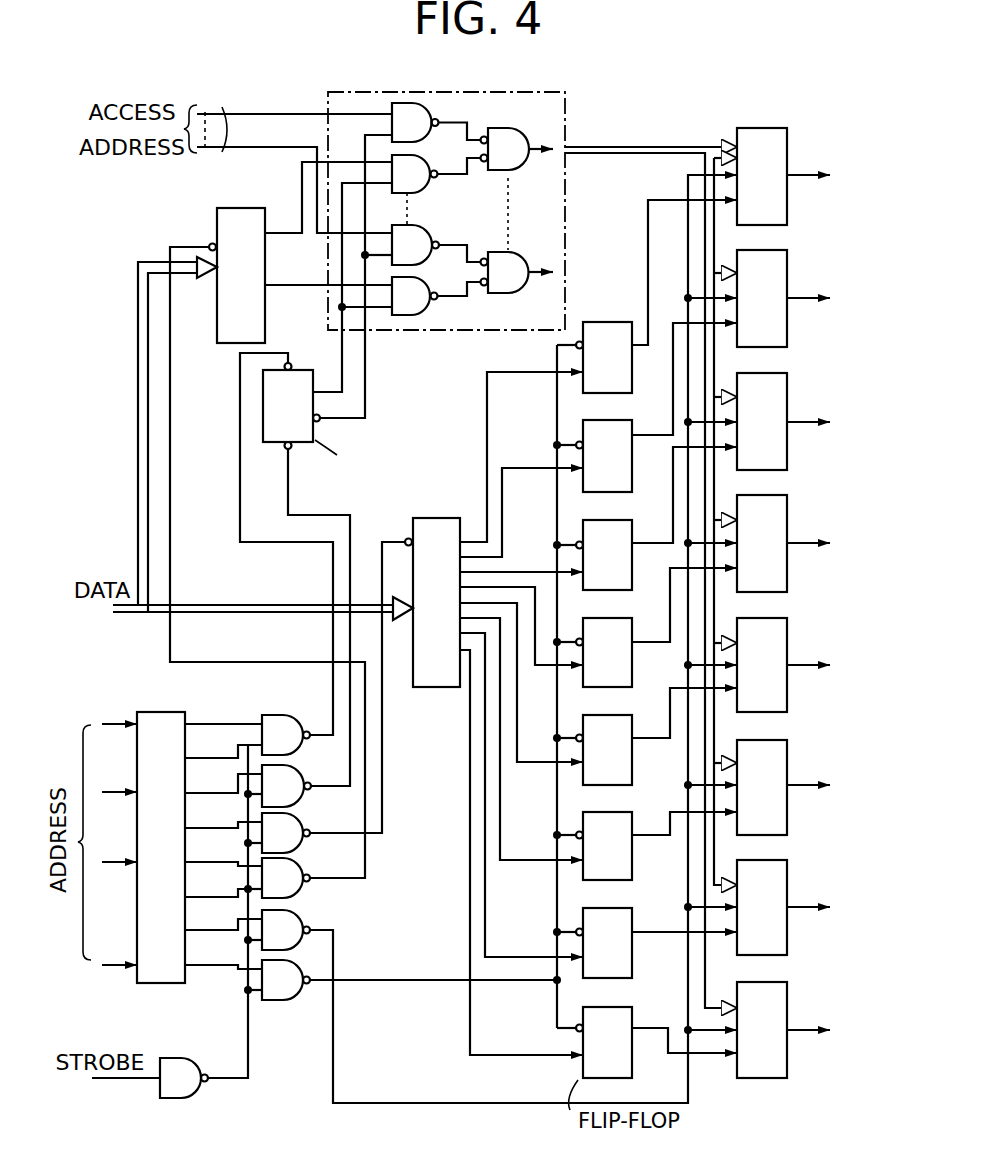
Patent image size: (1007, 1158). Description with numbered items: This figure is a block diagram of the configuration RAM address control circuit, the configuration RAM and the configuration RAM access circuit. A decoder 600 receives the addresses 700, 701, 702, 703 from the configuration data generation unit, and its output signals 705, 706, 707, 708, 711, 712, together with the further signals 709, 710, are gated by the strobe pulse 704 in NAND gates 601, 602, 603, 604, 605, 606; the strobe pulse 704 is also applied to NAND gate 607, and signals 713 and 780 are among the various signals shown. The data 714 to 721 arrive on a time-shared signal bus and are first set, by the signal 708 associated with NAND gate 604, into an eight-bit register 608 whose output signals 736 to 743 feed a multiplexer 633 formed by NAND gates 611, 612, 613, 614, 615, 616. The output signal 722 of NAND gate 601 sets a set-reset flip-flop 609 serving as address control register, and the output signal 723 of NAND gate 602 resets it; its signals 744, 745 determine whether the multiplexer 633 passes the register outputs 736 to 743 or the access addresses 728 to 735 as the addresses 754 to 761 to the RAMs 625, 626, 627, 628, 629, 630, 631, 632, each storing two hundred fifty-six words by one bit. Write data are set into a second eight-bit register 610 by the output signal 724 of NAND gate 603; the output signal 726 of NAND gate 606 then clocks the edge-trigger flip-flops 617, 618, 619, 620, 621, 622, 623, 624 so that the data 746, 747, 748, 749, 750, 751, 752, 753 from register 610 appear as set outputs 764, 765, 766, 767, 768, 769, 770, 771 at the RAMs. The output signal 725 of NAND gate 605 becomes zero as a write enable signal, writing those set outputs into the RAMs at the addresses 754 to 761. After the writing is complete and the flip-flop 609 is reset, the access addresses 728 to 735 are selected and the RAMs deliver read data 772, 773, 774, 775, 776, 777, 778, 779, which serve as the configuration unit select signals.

The decoder 600 is at (152, 712).
The NAND gate 601 is at (287, 715).
The NAND gate 602 is at (286, 771).
The NAND gate 603 is at (290, 815).
The NAND gate 604 is at (290, 865).
The NAND gate 605 is at (302, 920).
The NAND gate 606 is at (282, 1001).
The NAND gate 607 is at (197, 1093).
The 8-bit register 608 is at (213, 208).
The set-reset flip-flop 609 is at (263, 400).
The 8-bit register 610 is at (430, 518).
The NAND gate 611 is at (429, 107).
The NAND gate 612 is at (425, 190).
The NAND gate 613 is at (522, 128).
The NAND gate 614 is at (426, 232).
The NAND gate 615 is at (430, 314).
The NAND gate 616 is at (508, 294).
The edge-trigger flip-flop 617 is at (608, 322).
The edge-trigger flip-flop 618 is at (629, 420).
The edge-trigger flip-flop 619 is at (629, 522).
The edge-trigger flip-flop 620 is at (629, 620).
The edge-trigger flip-flop 621 is at (629, 717).
The edge-trigger flip-flop 622 is at (629, 814).
The edge-trigger flip-flop 623 is at (629, 907).
The edge-trigger flip-flop 624 is at (629, 1009).
The RAM 625 is at (765, 128).
The RAM 626 is at (787, 261).
The RAM 627 is at (787, 389).
The RAM 628 is at (787, 525).
The RAM 629 is at (787, 633).
The RAM 630 is at (787, 758).
The RAM 631 is at (787, 875).
The RAM 632 is at (787, 1003).
The multiplexer 633 is at (446, 193).
The address 700 is at (118, 730).
The address 701 is at (118, 798).
The address 702 is at (118, 868).
The address 703 is at (106, 965).
The strobe pulse 704 is at (118, 1080).
The output signal 705 is at (212, 722).
The output signal 706 is at (239, 757).
The output signal 707 is at (239, 787).
The output signal 708 is at (223, 814).
The signal 709 is at (223, 850).
The signal 710 is at (223, 883).
The output signal 711 is at (223, 918).
The output signal 712 is at (223, 953).
The signal 713 is at (248, 1072).
The data 714 is at (263, 438).
The data 721 is at (188, 605).
The output signal 722 is at (328, 624).
The output signal 723 is at (348, 649).
The output signal 724 is at (382, 755).
The output signal 725 is at (340, 1070).
The output signal 726 is at (400, 983).
The access address 728 is at (294, 141).
The access address 735 is at (222, 105).
The output signal 736 is at (286, 223).
The output signal 743 is at (298, 213).
The signal 744 is at (342, 357).
The signal 745 is at (363, 405).
The data 746 is at (534, 371).
The data 747 is at (527, 467).
The data 748 is at (531, 571).
The data 749 is at (554, 668).
The data 750 is at (517, 744).
The data 751 is at (547, 862).
The data 752 is at (540, 956).
The data 753 is at (549, 1050).
The address 754 is at (651, 551).
The address 761 is at (596, 145).
The set output 764 is at (650, 227).
The set output 765 is at (667, 435).
The set output 766 is at (667, 543).
The set output 767 is at (667, 642).
The set output 768 is at (667, 738).
The set output 769 is at (667, 835).
The set output 770 is at (667, 932).
The set output 771 is at (667, 1028).
The read data 772 is at (820, 161).
The read data 773 is at (820, 286).
The read data 774 is at (820, 409).
The read data 775 is at (820, 531).
The read data 776 is at (820, 651).
The read data 777 is at (820, 774).
The read data 778 is at (820, 894).
The read data 779 is at (820, 1018).
The signal 780 is at (365, 871).